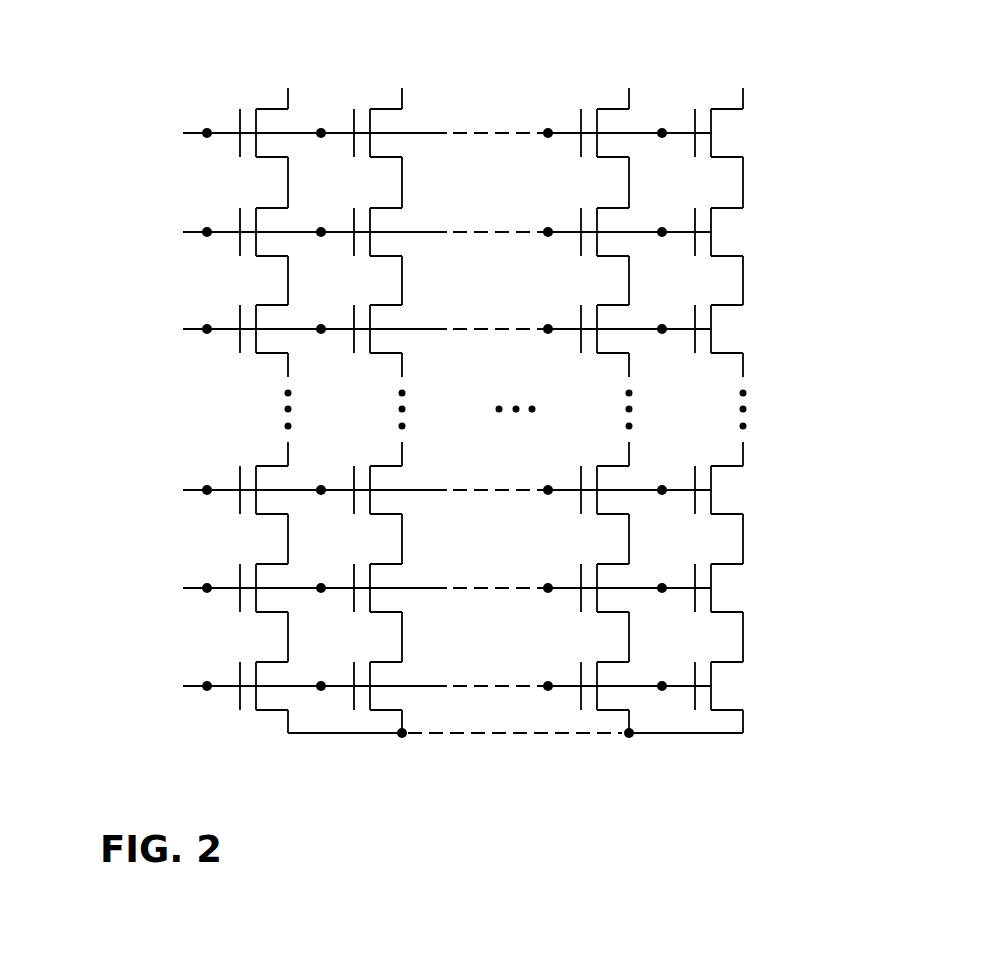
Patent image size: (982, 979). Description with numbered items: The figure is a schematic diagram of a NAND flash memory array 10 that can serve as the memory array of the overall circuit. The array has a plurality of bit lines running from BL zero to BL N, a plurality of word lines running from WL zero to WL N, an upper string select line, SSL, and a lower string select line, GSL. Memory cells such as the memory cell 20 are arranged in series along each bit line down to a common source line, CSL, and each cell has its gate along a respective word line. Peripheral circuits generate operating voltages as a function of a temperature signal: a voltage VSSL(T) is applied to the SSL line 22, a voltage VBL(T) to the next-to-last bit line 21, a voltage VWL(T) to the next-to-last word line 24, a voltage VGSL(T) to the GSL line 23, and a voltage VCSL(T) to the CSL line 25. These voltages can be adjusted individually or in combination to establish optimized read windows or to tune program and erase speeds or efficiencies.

The array 10 is at (427, 452).
The memory cell 20 is at (263, 505).
The bit line BL N-1 21 is at (622, 92).
The SSL line 22 is at (205, 131).
The GSL line 23 is at (218, 686).
The word line WL N-1 24 is at (643, 332).
The CSL line 25 is at (437, 733).